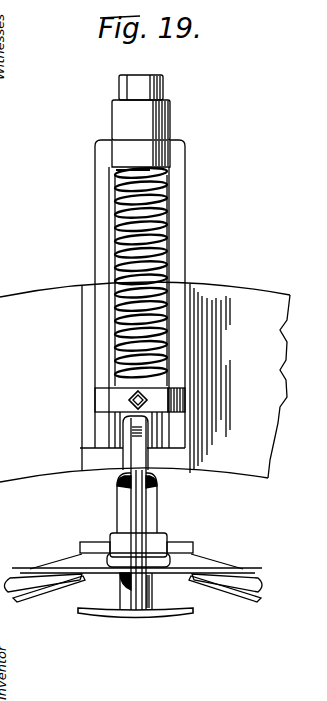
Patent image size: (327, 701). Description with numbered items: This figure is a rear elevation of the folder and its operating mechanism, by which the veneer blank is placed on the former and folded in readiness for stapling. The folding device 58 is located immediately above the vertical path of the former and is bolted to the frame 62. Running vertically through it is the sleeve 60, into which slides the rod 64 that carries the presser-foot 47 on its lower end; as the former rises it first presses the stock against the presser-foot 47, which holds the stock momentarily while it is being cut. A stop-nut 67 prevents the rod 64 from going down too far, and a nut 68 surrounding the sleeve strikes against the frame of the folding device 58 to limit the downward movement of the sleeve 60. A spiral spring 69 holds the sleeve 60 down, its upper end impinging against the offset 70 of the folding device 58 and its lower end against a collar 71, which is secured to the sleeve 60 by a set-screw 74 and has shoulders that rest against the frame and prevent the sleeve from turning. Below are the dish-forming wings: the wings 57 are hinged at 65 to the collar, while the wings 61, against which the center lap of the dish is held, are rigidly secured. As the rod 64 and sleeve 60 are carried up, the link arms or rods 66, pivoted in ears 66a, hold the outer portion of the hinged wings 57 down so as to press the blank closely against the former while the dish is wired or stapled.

The presser-foot 47 is at (135, 624).
The hinged wings 57 is at (80, 568).
The folding device 58 is at (181, 163).
The sleeve 60 is at (160, 225).
The rigid wings 61 is at (38, 593).
The frame 62 is at (145, 382).
The rod 64 is at (152, 600).
The hinge 65 is at (194, 546).
The link arms 66 is at (140, 510).
The ears 66a is at (128, 430).
The stop-nut 67 is at (165, 86).
The nut 68 is at (172, 125).
The spiral spring 69 is at (110, 192).
The offset 70 is at (153, 157).
The collar 71 is at (102, 400).
The set-screw 74 is at (148, 398).